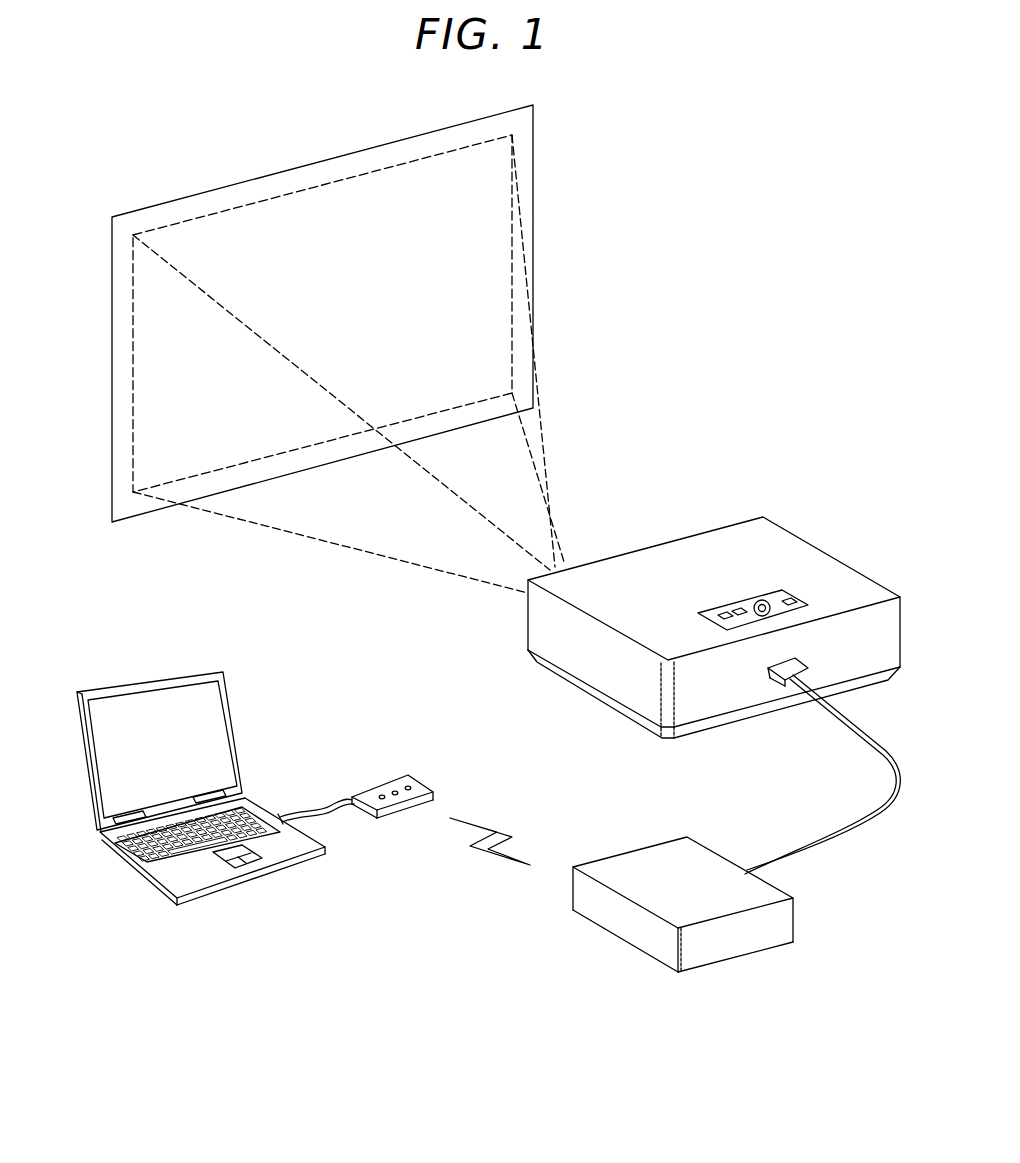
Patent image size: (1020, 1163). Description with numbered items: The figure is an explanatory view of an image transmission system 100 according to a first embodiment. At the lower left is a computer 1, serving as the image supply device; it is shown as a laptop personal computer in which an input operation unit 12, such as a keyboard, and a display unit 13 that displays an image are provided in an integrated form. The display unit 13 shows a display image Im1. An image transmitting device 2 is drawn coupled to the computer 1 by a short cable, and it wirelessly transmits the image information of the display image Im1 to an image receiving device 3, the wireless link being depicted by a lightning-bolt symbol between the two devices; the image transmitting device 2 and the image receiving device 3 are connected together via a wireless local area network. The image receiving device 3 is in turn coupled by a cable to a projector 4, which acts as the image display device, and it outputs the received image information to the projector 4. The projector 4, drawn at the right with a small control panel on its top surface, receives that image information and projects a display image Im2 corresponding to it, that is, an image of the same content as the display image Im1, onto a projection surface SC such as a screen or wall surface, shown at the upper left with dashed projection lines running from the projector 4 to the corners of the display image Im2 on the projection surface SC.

The image transmission system 100 is at (826, 287).
The projection surface SC is at (128, 312).
The display image Im2 is at (270, 221).
The projector 4 is at (822, 515).
The computer 1 is at (215, 769).
The display unit 13 is at (175, 681).
The display image Im1 is at (215, 715).
The input operation unit 12 is at (125, 857).
The image transmitting device 2 is at (420, 762).
The image receiving device 3 is at (620, 843).